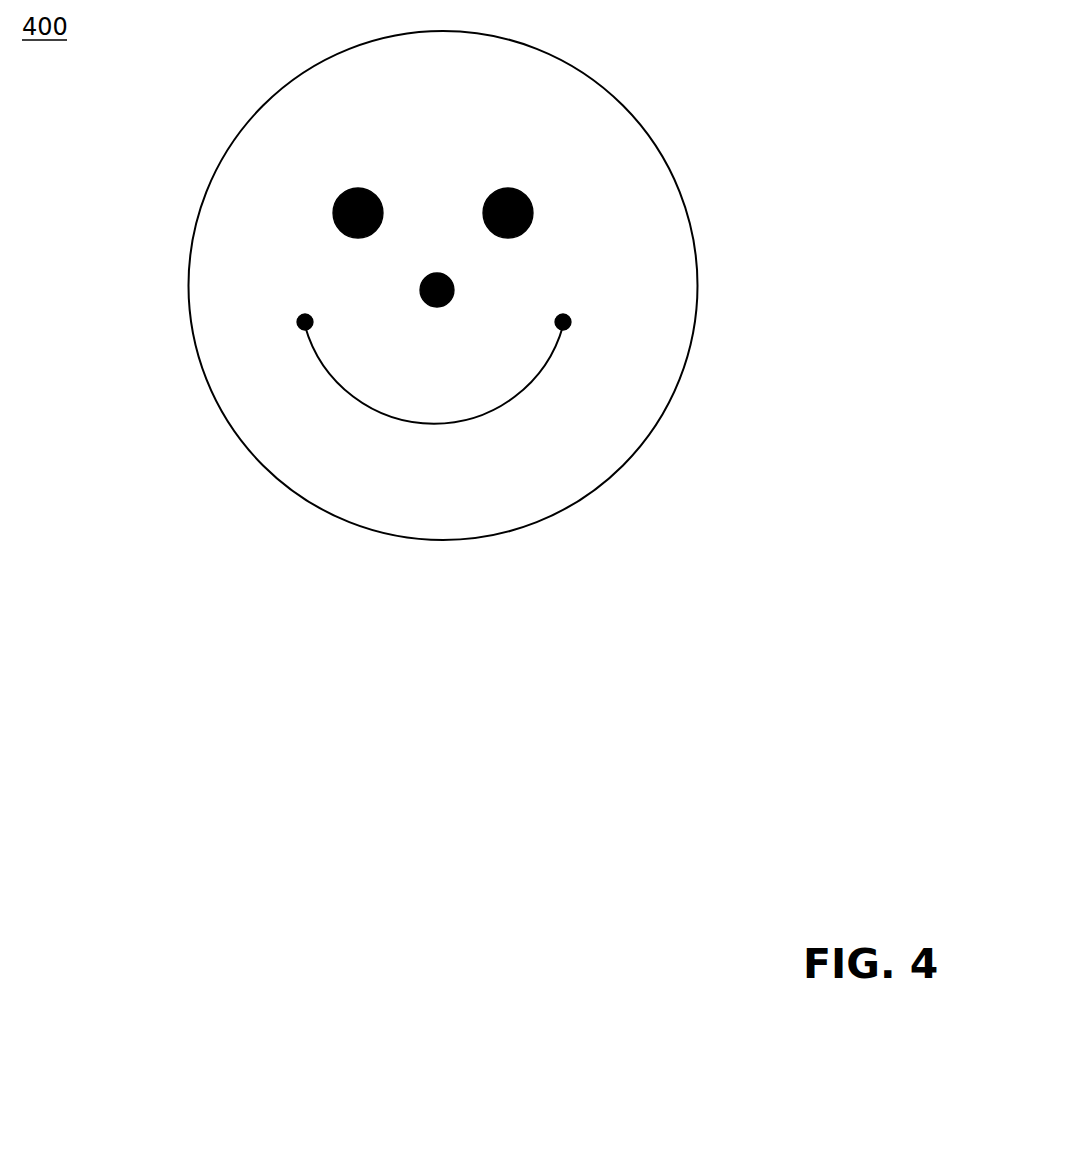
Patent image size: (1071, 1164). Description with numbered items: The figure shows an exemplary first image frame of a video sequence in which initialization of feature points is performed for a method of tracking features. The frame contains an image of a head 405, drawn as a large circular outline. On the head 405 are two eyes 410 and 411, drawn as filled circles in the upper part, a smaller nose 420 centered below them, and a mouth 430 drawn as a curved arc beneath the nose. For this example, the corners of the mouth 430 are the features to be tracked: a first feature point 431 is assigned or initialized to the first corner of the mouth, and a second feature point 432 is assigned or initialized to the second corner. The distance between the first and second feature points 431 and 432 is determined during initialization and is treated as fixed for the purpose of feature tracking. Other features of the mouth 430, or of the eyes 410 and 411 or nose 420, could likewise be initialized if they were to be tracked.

The head 405 is at (623, 103).
The eye 410 is at (340, 195).
The eye 411 is at (525, 194).
The nose 420 is at (450, 278).
The mouth 430 is at (452, 428).
The first feature point 431 is at (298, 320).
The second feature point 432 is at (570, 316).